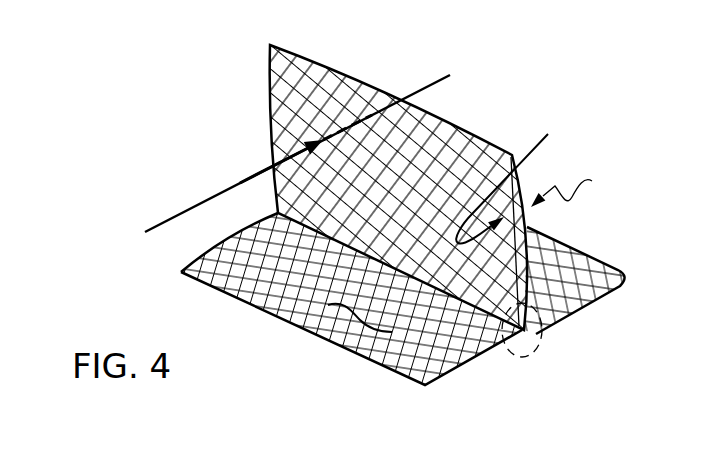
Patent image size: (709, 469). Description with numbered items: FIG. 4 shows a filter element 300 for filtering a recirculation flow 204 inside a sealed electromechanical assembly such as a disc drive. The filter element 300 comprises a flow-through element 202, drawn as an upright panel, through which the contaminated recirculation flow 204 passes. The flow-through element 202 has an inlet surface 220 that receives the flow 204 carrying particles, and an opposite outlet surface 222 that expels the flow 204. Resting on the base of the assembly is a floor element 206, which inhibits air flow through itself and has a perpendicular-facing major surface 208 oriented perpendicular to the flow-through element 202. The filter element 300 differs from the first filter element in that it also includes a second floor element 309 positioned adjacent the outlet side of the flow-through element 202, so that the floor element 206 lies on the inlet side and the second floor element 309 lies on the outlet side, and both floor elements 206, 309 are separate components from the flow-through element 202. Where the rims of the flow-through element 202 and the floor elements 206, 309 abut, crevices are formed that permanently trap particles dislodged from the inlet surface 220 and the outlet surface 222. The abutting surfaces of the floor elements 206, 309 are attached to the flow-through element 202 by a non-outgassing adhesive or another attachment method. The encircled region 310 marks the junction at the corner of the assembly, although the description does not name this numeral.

The filter element 300 is at (160, 138).
The flow-through element 202 is at (270, 117).
The recirculation flow 204 is at (197, 203).
The floor element 206 is at (176, 258).
The perpendicular-facing major surface 208 is at (355, 318).
The inlet surface 220 is at (523, 185).
The outlet surface 222 is at (581, 189).
The second floor element 309 is at (581, 251).
The hinge point 310 is at (514, 360).